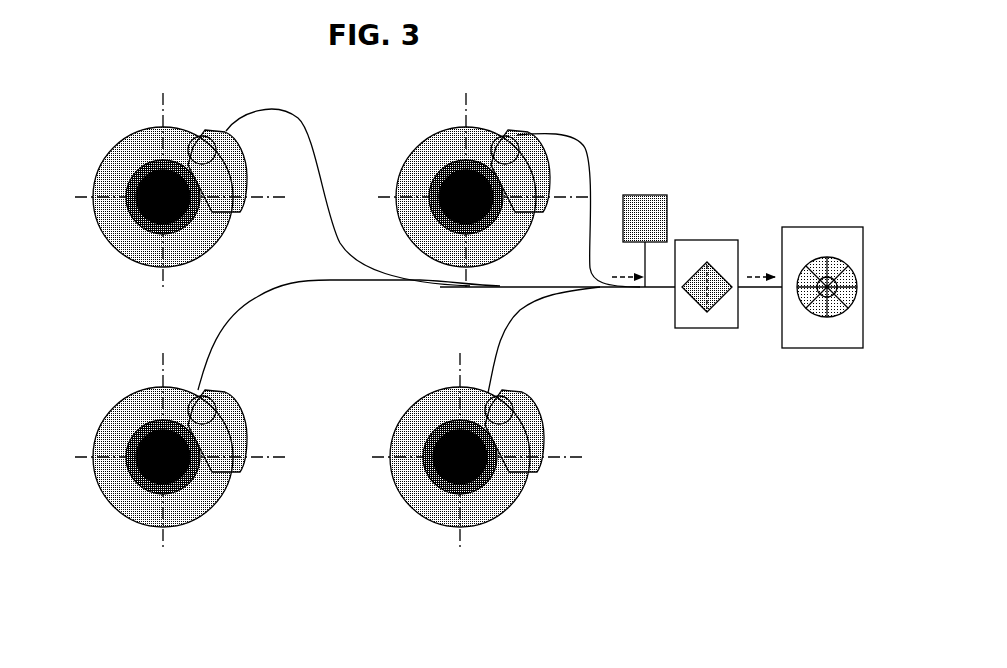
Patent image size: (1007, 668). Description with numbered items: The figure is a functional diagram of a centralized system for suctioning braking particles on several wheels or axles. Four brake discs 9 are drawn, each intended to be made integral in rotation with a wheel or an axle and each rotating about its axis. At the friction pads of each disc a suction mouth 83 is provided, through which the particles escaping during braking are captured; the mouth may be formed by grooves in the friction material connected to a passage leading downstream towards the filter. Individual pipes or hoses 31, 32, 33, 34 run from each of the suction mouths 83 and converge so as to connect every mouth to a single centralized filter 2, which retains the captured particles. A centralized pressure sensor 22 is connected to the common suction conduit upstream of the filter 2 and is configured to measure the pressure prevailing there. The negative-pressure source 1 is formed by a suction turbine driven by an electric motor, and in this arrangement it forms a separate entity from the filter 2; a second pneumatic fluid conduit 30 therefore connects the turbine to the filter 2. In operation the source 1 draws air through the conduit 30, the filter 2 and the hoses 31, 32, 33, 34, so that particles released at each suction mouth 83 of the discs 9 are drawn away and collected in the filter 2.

The negative-pressure source 1 is at (828, 220).
The filter 2 is at (712, 233).
The brake disc 9 is at (103, 148).
The pressure sensor 22 is at (647, 193).
The second pneumatic fluid conduit 30 is at (762, 290).
The pipe or hose 31 is at (300, 123).
The pipe or hose 32 is at (587, 140).
The pipe or hose 33 is at (212, 353).
The pipe or hose 34 is at (503, 342).
The suction mouth 83 is at (205, 138).